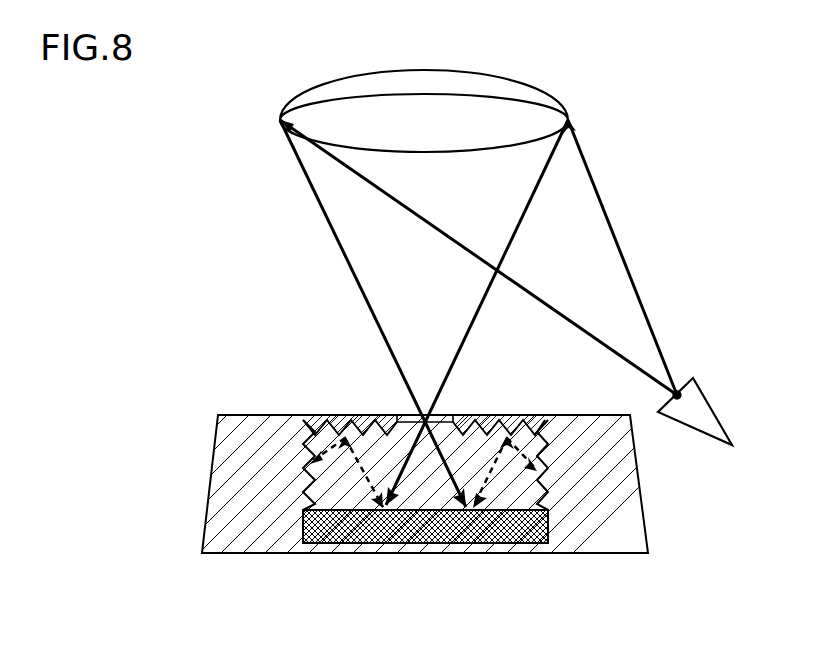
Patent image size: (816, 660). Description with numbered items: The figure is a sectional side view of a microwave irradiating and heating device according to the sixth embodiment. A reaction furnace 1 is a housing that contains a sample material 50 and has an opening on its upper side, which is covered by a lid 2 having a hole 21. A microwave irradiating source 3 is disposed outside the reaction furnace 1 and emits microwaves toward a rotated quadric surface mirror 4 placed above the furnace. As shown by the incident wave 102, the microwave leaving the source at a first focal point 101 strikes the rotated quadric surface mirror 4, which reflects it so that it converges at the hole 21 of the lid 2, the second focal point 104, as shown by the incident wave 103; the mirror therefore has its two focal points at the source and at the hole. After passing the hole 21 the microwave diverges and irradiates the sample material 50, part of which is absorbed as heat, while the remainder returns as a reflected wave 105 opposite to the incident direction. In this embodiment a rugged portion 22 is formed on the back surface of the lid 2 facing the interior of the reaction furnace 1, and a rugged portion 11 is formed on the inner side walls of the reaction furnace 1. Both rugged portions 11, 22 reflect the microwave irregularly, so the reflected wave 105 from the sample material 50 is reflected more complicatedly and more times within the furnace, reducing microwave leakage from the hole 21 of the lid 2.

The reaction furnace 1 is at (218, 468).
The lid 2 is at (528, 414).
The microwave irradiating source 3 is at (722, 418).
The rotated quadric surface mirror 4 is at (550, 88).
The rugged portion 11 is at (303, 438).
The hole 21 is at (408, 415).
The rugged portion 22 is at (353, 425).
The sample material 50 is at (357, 535).
The first focal point 101 is at (680, 390).
The incident wave 102 is at (603, 198).
The incident wave 103 is at (323, 218).
The second focal point 104 is at (428, 420).
The reflected wave 105 is at (487, 478).